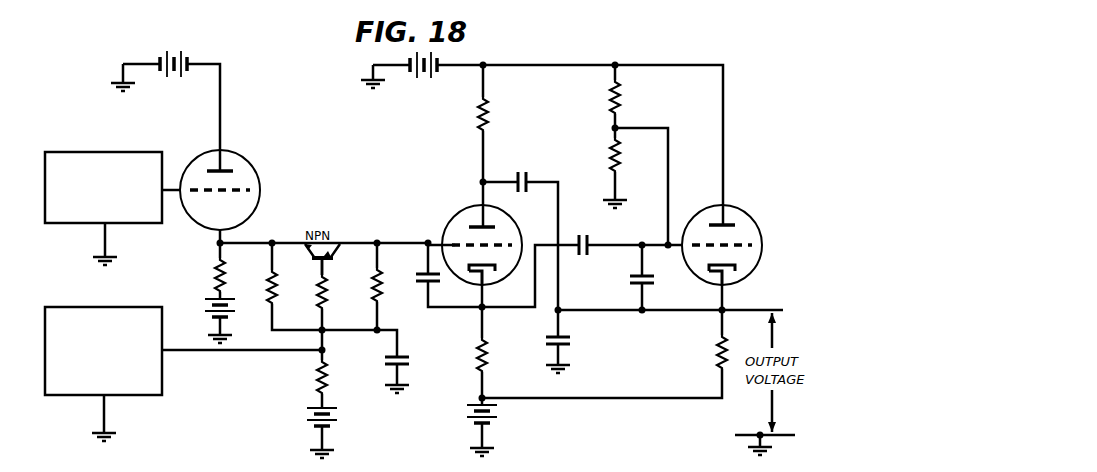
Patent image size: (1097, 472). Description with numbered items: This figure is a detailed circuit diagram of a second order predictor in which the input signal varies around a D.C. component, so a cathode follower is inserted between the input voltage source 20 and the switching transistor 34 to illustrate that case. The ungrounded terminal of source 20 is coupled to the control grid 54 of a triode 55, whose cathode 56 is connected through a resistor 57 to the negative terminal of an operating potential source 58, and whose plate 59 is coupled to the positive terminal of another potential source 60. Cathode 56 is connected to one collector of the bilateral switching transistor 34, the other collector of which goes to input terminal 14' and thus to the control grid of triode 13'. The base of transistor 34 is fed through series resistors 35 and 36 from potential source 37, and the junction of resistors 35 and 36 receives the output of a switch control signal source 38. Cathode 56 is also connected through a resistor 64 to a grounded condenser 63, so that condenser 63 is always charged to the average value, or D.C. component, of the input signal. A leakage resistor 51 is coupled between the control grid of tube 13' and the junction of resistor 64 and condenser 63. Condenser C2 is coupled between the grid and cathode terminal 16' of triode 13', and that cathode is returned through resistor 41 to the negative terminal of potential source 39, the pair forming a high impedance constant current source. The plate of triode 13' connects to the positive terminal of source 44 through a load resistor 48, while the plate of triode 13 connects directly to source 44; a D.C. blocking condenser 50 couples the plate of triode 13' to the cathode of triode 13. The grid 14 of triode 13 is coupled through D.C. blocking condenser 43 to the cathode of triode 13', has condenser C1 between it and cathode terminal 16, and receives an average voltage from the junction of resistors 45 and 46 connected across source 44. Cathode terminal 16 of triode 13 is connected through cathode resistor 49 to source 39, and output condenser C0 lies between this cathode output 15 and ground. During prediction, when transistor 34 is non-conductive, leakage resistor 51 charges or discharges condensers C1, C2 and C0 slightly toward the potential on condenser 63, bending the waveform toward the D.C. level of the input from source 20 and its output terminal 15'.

The source of unidirectional operating potential 60 is at (171, 78).
The input voltage source 20 is at (106, 152).
The control grid 54 is at (184, 188).
The plate 59 is at (230, 168).
The cathode follower triode 55 is at (258, 180).
The cathode 56 is at (216, 243).
The resistor 57 is at (215, 274).
The source of unidirectional operating potential 58 is at (208, 309).
The switch control signal source 38 is at (98, 307).
The resistor 64 is at (268, 286).
The bilateral switching transistor 34 is at (359, 277).
The resistor 35 is at (318, 296).
The leakage resistor 51 is at (372, 290).
The resistor 36 is at (318, 372).
The source of unidirectional operating potential 37 is at (312, 418).
The condenser 63 is at (388, 358).
The condenser C2 is at (418, 278).
The source of unidirectional operating potential 44 is at (420, 78).
The load resistor 48 is at (489, 113).
The resistor 45 is at (610, 95).
The resistor 46 is at (610, 157).
The D.C. blocking condenser 50 is at (528, 166).
The output terminal 15' is at (470, 204).
The input terminal 14' is at (462, 229).
The triode 13' is at (496, 245).
The cathode terminal 16' is at (495, 284).
The D.C. blocking condenser 43 is at (583, 234).
The condenser C1 is at (632, 280).
The output condenser C0 is at (568, 343).
The resistor 41 is at (477, 360).
The source of operating potential 39 is at (492, 428).
The input terminal 14 is at (714, 222).
The output terminal 15 is at (739, 205).
The triode 13 is at (738, 245).
The cathode terminal 16 is at (739, 283).
The cathode resistor 49 is at (716, 350).